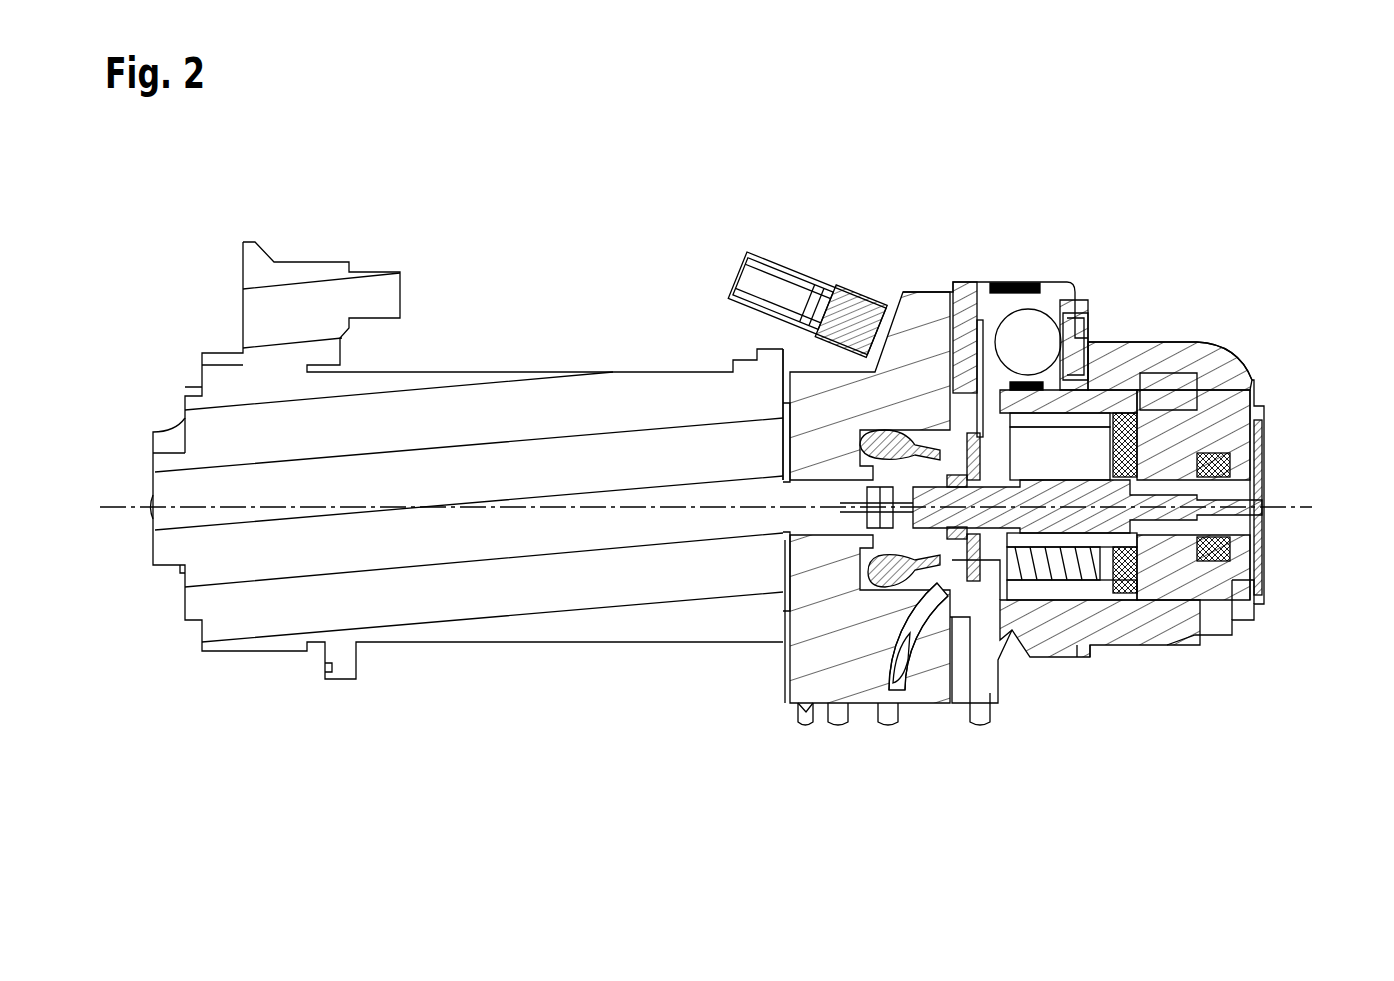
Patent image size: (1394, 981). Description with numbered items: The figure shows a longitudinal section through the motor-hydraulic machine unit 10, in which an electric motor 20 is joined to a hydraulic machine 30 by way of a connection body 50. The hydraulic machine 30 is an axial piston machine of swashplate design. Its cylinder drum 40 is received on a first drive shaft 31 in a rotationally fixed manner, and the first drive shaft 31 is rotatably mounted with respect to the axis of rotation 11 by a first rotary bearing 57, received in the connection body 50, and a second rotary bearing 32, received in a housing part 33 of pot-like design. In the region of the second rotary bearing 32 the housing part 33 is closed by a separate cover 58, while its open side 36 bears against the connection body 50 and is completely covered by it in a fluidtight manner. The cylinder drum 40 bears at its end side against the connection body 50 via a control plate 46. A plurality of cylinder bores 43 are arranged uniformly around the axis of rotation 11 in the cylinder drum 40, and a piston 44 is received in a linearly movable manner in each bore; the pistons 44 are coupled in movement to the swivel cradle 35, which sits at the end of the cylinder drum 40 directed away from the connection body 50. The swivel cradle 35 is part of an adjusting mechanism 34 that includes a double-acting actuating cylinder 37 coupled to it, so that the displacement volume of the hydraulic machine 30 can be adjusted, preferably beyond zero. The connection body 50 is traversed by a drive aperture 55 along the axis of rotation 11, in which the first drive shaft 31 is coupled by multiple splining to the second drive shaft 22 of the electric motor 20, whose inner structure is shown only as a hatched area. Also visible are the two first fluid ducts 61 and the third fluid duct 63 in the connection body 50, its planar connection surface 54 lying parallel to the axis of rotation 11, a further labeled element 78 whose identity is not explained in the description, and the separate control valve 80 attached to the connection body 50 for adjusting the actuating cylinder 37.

The motor-hydraulic machine unit 10 is at (1283, 176).
The axis of rotation 11 is at (1287, 507).
The electric motor 20 is at (519, 632).
The second drive shaft 22 is at (840, 705).
The hydraulic machine 30 is at (1172, 340).
The first drive shaft 31 is at (1073, 515).
The second rotary bearing 32 is at (1240, 588).
The housing part 33 is at (1060, 642).
The adjusting mechanism 34 is at (1086, 334).
The swivel cradle 35 is at (1183, 437).
The open side 36 is at (1005, 690).
The actuating cylinder 37 is at (993, 345).
The cylinder drum 40 is at (1087, 582).
The cylinder bores 43 is at (990, 605).
The piston 44 is at (1060, 500).
The control plate 46 is at (1020, 335).
The connection body 50 is at (917, 700).
The connection surface 54 is at (806, 712).
The drive aperture 55 is at (825, 475).
The first rotary bearing 57 is at (972, 335).
The cover 58 is at (1262, 480).
The first fluid ducts 61 is at (940, 452).
The third fluid duct 63 is at (933, 700).
The plate 78 is at (970, 455).
The control valve 80 is at (863, 297).